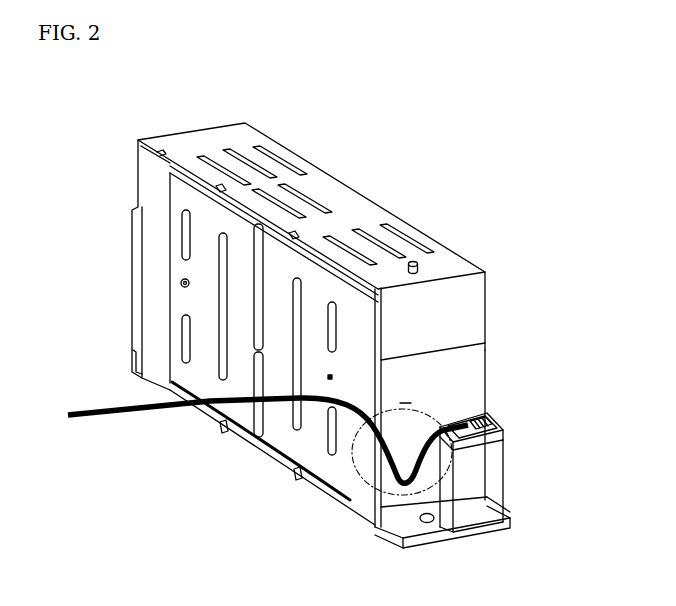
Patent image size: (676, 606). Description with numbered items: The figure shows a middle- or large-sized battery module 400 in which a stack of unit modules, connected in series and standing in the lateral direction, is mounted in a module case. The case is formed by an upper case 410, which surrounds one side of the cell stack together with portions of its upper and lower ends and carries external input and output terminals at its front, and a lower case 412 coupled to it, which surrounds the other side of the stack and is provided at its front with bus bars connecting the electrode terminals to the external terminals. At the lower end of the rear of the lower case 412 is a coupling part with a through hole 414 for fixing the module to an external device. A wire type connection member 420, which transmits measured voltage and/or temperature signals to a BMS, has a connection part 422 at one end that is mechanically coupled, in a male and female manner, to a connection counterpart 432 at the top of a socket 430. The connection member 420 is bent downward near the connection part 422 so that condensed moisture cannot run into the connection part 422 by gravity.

The middle- or large-sized battery module 400 is at (104, 106).
The upper case 410 is at (473, 307).
The lower case 412 is at (473, 368).
The through hole 414 is at (432, 533).
The wire type connection member 420 is at (155, 420).
The connection part 422 is at (476, 418).
The socket 430 is at (493, 478).
The connection counterpart 432 is at (503, 430).